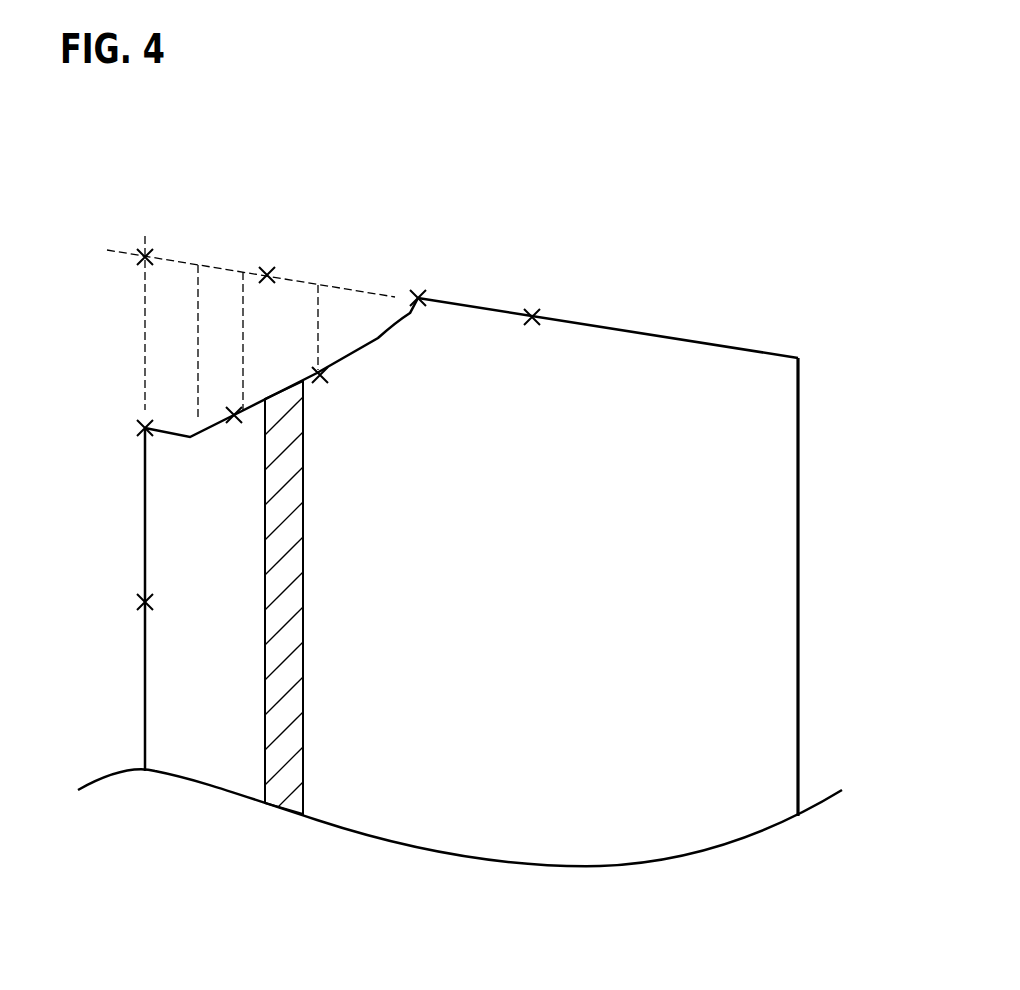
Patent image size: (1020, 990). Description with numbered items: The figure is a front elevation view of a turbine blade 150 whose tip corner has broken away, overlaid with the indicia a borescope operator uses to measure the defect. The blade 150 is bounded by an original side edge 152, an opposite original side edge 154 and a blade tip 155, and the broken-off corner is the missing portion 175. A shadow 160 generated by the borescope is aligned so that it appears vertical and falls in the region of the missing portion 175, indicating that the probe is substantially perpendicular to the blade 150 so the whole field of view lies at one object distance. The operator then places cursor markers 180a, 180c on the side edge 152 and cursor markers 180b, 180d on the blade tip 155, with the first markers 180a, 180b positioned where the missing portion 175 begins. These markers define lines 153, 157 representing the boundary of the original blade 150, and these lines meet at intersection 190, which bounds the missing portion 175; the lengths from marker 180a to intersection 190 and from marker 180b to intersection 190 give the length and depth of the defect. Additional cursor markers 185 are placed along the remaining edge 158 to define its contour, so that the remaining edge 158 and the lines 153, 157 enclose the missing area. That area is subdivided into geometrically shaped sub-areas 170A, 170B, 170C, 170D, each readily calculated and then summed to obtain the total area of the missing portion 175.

The blade 150 is at (598, 720).
The original side edge 152 is at (145, 690).
The missing edge line 153 is at (126, 331).
The original side edge 154 is at (802, 551).
The blade tip 155 is at (695, 340).
The missing edge line 157 is at (271, 263).
The remaining edge 158 is at (378, 338).
The shadow 160 is at (303, 670).
The sub-area 170A is at (165, 294).
The sub-area 170B is at (223, 288).
The sub-area 170C is at (300, 297).
The sub-area 170D is at (350, 300).
The missing portion 175 is at (165, 388).
The cursor marker 180a is at (141, 436).
The cursor marker 180b is at (422, 294).
The cursor marker 180c is at (140, 601).
The cursor marker 180d is at (536, 314).
The additional cursor markers 185 is at (322, 376).
The intersection 190 is at (151, 244).